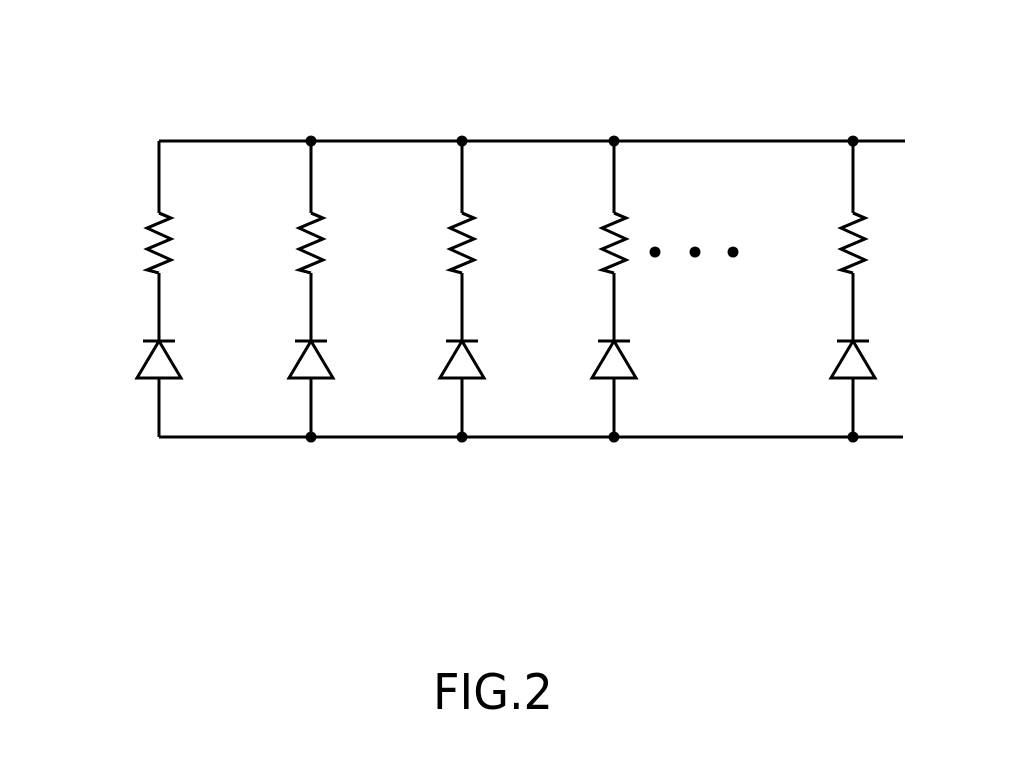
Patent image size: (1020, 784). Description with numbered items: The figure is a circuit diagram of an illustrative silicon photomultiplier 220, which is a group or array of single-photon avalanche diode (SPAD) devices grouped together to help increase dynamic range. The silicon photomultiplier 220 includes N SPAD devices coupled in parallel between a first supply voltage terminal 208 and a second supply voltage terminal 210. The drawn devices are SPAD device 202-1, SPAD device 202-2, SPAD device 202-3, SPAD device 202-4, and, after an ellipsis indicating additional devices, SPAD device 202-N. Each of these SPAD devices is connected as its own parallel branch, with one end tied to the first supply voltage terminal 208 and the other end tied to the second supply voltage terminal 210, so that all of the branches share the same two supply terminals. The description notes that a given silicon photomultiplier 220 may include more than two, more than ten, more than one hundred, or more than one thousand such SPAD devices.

The silicon photomultiplier 220 is at (137, 118).
The SPAD device 202-1 is at (122, 240).
The SPAD device 202-2 is at (273, 247).
The SPAD device 202-3 is at (427, 248).
The SPAD device 202-4 is at (578, 248).
The SPAD device 202-N is at (817, 248).
The first supply voltage terminal 208 is at (873, 141).
The second supply voltage terminal 210 is at (877, 437).